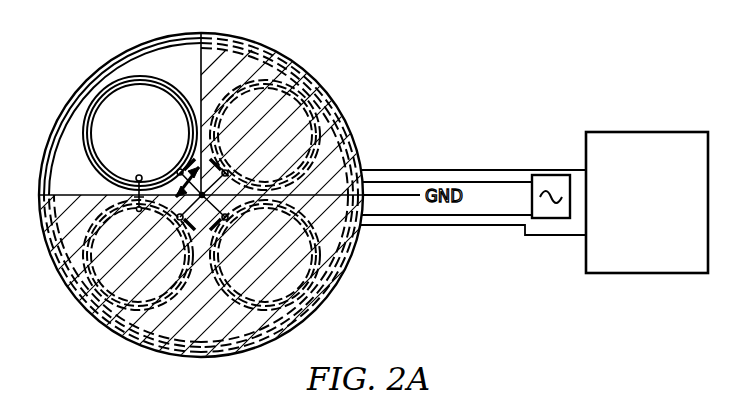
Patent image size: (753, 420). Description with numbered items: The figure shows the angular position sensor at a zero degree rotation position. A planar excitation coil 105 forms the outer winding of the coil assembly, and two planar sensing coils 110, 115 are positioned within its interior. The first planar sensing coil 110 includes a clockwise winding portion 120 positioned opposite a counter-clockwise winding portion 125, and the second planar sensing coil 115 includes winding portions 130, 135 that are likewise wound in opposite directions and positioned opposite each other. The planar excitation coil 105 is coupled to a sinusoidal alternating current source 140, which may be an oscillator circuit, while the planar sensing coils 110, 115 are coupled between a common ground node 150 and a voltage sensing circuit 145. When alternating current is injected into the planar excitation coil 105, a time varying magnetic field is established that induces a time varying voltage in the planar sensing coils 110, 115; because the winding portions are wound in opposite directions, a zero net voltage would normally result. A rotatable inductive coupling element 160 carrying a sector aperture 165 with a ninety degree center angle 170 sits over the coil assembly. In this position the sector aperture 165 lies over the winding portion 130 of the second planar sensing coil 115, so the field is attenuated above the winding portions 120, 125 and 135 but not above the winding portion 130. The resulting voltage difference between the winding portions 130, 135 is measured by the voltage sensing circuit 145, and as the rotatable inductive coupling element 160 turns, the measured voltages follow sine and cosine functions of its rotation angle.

The planar excitation coil 105 is at (490, 180).
The first planar sensing coil 110 is at (410, 166).
The second planar sensing coil 115 is at (487, 227).
The clockwise winding portion 120 is at (283, 80).
The counter-clockwise winding portion 125 is at (86, 308).
The winding portion 130 is at (88, 100).
The winding portion 135 is at (306, 318).
The sinusoidal alternating current source 140 is at (548, 175).
The voltage sensing circuit 145 is at (645, 131).
The ground node 150 is at (397, 217).
The rotatable inductive coupling element 160 is at (188, 46).
The sector aperture 165 is at (104, 59).
The center angle 170 is at (176, 168).